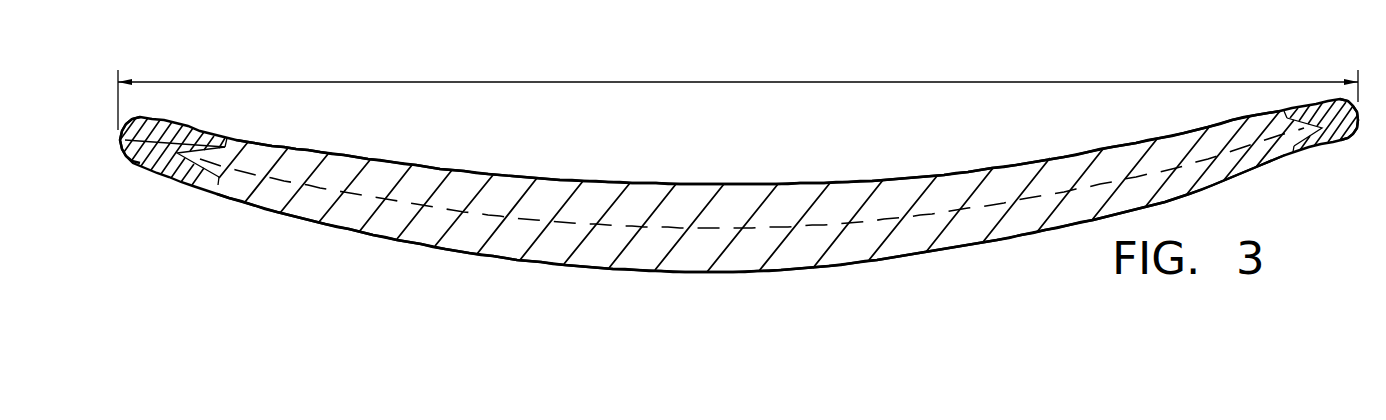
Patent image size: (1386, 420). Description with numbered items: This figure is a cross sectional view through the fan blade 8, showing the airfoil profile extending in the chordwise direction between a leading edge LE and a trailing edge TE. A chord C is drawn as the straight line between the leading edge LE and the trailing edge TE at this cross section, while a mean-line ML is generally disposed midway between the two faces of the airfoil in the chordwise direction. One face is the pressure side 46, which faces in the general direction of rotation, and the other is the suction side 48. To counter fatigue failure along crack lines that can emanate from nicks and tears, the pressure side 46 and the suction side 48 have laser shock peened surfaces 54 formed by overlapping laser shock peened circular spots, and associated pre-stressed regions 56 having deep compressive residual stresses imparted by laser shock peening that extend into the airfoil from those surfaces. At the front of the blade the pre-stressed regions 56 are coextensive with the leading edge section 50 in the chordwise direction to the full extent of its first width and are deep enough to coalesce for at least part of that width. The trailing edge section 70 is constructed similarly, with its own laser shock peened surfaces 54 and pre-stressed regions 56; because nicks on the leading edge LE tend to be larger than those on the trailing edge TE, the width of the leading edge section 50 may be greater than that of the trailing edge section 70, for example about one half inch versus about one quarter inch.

The fan blade 8 is at (805, 170).
The pressure side 46 is at (527, 173).
The suction side 48 is at (427, 247).
The leading edge section 50 is at (124, 146).
The laser shock peened surfaces 54 is at (162, 118).
The pre-stressed region 56 is at (226, 139).
The trailing edge section 70 is at (1331, 145).
The mean-line ML is at (673, 227).
The chord C is at (420, 84).
The leading edge LE is at (118, 137).
The trailing edge TE is at (1358, 111).